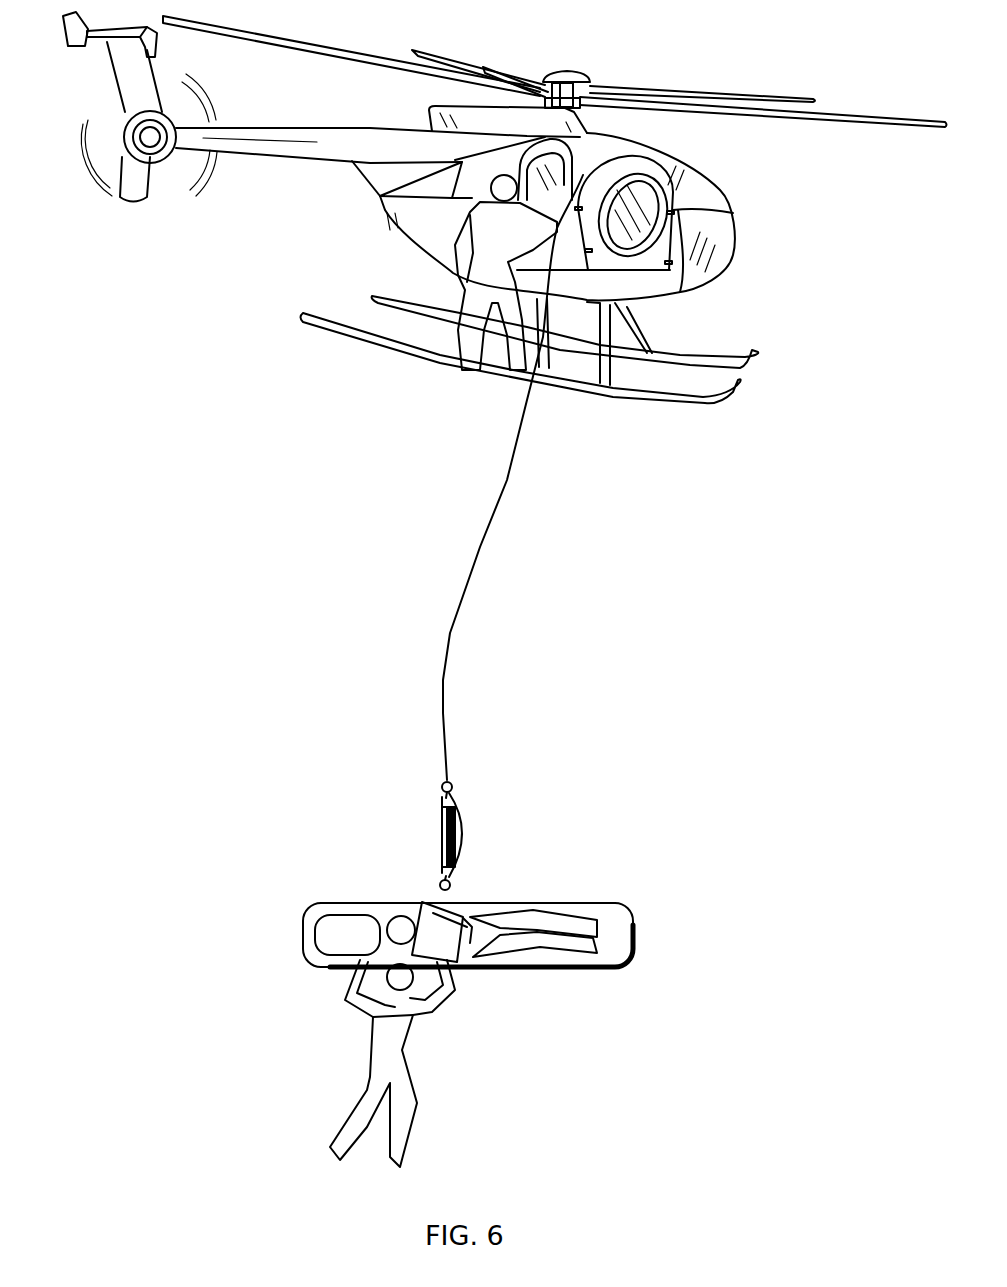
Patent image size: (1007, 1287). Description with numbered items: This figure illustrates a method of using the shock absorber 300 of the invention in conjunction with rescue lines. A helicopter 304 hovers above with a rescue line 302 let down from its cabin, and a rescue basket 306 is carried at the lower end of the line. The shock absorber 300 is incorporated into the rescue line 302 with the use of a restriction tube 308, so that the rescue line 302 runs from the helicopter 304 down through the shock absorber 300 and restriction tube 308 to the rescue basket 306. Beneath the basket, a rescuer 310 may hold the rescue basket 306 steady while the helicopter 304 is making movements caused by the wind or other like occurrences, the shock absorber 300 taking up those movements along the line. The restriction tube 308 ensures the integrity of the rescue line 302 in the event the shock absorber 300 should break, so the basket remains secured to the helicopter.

The shock absorber 300 is at (417, 833).
The rescue line 302 is at (452, 630).
The helicopter 304 is at (340, 160).
The rescue basket 306 is at (581, 900).
The restriction tube 308 is at (466, 806).
The rescuer 310 is at (390, 1030).